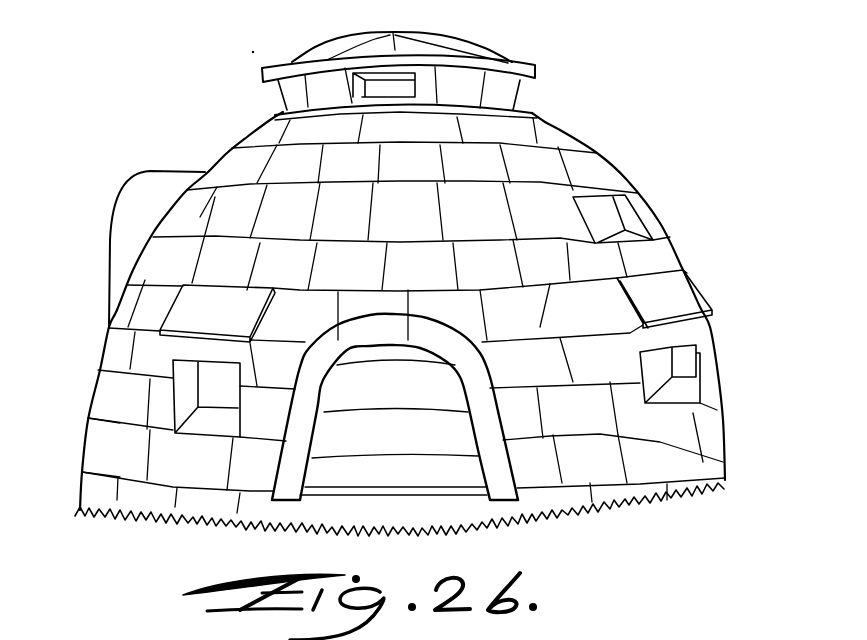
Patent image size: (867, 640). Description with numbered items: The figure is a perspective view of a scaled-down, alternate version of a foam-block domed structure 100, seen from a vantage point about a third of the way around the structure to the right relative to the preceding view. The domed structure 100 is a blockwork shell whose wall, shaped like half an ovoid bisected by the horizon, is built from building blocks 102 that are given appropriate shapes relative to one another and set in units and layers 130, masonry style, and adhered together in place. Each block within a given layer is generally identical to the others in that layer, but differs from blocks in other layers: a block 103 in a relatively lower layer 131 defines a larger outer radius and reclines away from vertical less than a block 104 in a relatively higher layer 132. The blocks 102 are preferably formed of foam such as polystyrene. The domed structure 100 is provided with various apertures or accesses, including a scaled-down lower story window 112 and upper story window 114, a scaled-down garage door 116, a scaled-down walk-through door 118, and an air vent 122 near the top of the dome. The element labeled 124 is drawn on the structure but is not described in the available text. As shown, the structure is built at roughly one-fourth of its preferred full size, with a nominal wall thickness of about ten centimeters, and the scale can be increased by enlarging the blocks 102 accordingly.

The foam-block domed structure 100 is at (104, 130).
The building block 102 is at (88, 496).
The block in a relatively lower layer 103 is at (100, 462).
The block in a relatively higher layer 104 is at (218, 158).
The lower story window 112 is at (694, 356).
The upper story window 114 is at (640, 222).
The garage door 116 is at (114, 207).
The walk-through door 118 is at (285, 483).
The air vent 122 is at (418, 79).
The awning 124 is at (697, 305).
The layer 130 is at (748, 457).
The relatively lower layer 131 is at (735, 407).
The relatively higher layer 132 is at (650, 148).